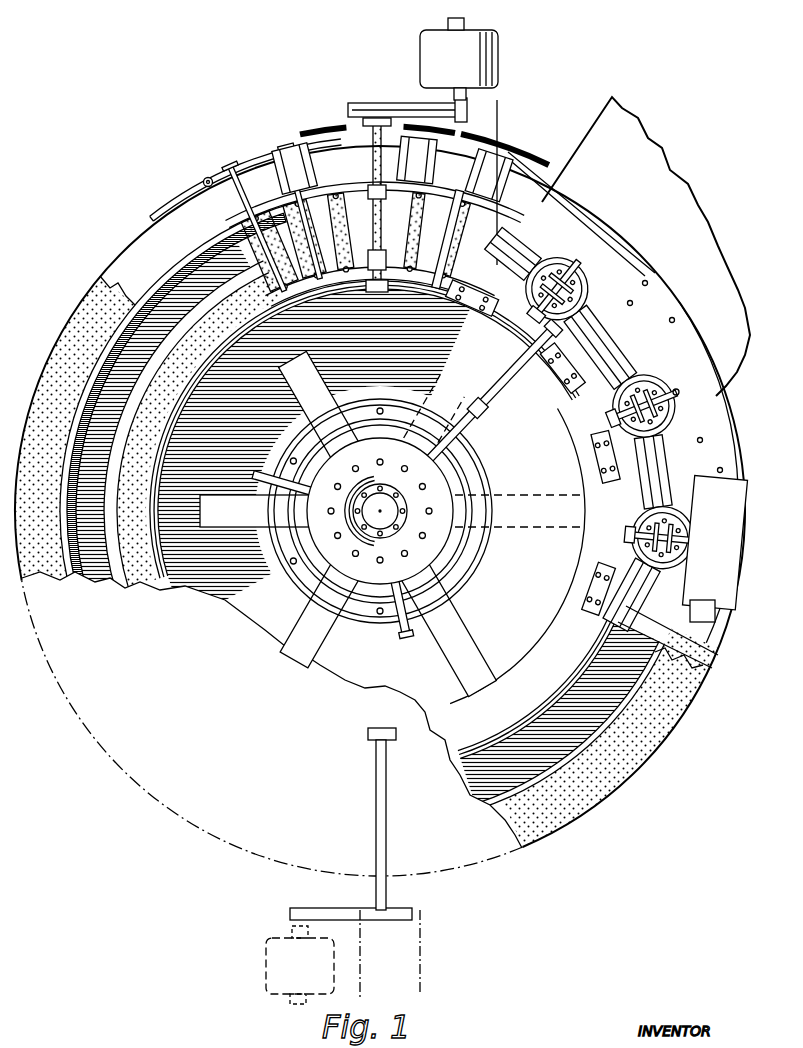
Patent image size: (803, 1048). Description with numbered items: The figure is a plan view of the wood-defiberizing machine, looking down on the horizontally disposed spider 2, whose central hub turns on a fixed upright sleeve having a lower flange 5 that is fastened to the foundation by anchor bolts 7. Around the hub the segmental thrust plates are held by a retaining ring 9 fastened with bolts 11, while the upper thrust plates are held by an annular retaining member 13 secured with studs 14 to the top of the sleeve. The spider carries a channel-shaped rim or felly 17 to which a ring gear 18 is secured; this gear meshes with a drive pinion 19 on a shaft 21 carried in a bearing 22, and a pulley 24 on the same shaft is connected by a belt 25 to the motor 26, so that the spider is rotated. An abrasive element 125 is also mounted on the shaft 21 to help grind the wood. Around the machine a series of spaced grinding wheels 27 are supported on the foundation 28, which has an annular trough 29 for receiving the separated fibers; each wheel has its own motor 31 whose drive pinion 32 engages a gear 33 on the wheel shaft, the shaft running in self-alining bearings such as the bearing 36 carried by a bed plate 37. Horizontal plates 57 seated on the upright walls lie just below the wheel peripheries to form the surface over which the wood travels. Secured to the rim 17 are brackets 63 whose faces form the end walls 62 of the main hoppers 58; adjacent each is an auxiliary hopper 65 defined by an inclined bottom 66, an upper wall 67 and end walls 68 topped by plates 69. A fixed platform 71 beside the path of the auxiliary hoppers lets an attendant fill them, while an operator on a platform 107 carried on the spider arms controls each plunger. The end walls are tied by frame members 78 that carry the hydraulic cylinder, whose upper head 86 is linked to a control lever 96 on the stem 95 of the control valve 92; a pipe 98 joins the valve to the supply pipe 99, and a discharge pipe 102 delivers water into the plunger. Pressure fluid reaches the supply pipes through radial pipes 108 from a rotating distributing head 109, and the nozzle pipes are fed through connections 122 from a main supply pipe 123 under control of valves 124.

The spider 2 is at (250, 548).
The lower flange 5 is at (298, 620).
The anchor bolts 7 is at (280, 580).
The retaining ring 9 is at (380, 490).
The bolts 11 is at (315, 475).
The retaining member 13 is at (450, 486).
The studs 14 is at (330, 512).
The rim or felly 17 is at (543, 642).
The ring gear 18 is at (432, 305).
The drive pinion 19 is at (381, 300).
The shaft 21 is at (372, 160).
The bearing 22 is at (382, 266).
The pulley 24 is at (366, 103).
The belt 25 is at (405, 103).
The motor 26 is at (500, 62).
The abrasive elements or grinding wheels 27 is at (240, 235).
The foundation 28 is at (62, 578).
The annular trough or channel 29 is at (108, 580).
The motor 31 is at (312, 167).
The drive pinion 32 is at (322, 125).
The gear 33 is at (300, 130).
The bearing 36 is at (290, 285).
The bed plate 37 is at (455, 136).
The plates 57 is at (437, 240).
The main hopper 58 is at (600, 312).
The end walls 62 is at (612, 637).
The brackets 63 is at (480, 305).
The auxiliary hopper 65 is at (605, 260).
The inclined bottom 66 is at (720, 556).
The upper wall 67 is at (735, 592).
The end walls 68 is at (656, 660).
The plates 69 is at (538, 197).
The fixed platform 71 is at (697, 227).
The frame members 78 is at (490, 262).
The head 86 is at (660, 412).
The control valve 92 is at (680, 536).
The stem 95 is at (622, 425).
The control lever 96 is at (628, 536).
The pipe 98 is at (560, 300).
The supply pipe 99 is at (612, 386).
The discharge pipe 102 is at (674, 388).
The platform 107 is at (453, 690).
The radially disposed pipes 108 is at (463, 438).
The distributing head 109 is at (393, 512).
The connections 122 is at (250, 180).
The main supply pipe 123 is at (173, 207).
The valves 124 is at (208, 178).
The abrasive element 125 is at (376, 222).